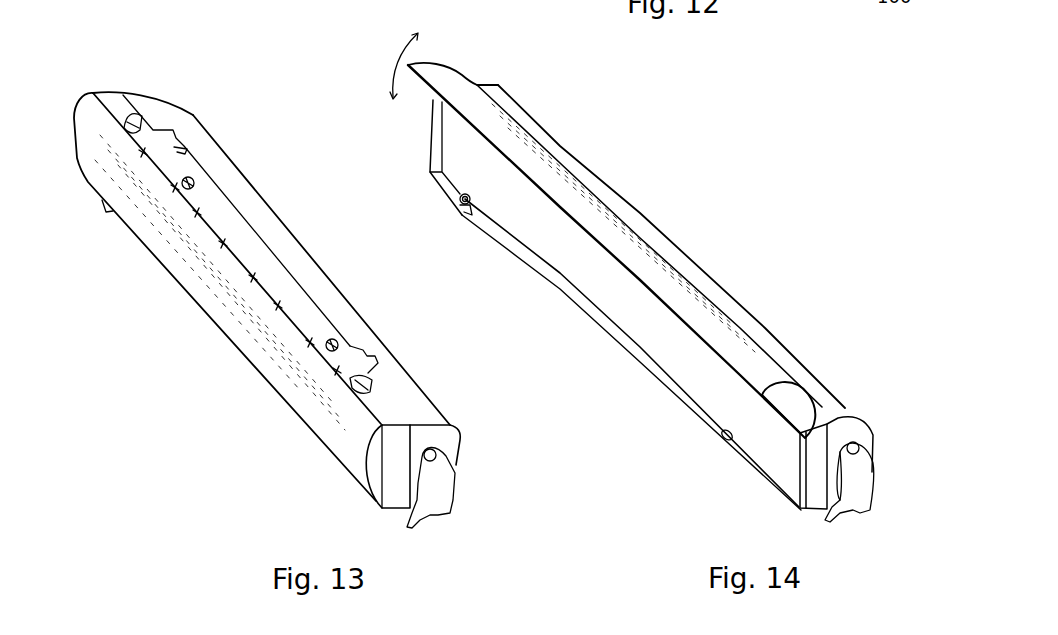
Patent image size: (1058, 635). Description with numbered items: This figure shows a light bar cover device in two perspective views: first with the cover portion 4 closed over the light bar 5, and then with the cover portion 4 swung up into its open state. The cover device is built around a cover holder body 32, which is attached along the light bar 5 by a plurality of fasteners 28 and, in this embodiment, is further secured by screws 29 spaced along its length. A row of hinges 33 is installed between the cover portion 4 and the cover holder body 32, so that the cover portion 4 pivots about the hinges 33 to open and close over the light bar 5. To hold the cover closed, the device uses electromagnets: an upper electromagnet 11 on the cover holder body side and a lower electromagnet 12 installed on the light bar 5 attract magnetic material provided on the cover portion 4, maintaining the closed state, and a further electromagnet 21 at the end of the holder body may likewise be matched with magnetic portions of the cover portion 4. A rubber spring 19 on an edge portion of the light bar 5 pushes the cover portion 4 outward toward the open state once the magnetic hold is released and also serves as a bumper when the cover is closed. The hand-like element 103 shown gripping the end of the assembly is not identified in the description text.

In FIG. 13, the cover portion 4 is at (192, 288).
In FIG. 14, the cover portion 4 is at (430, 72).
In FIG. 14, the light bar 5 is at (685, 261).
In FIG. 13, the electromagnet 11 is at (372, 385).
In FIG. 14, the electromagnet 12 is at (721, 438).
In FIG. 14, the rubber spring 19 is at (459, 197).
In FIG. 13, the electromagnet 21 is at (137, 117).
In FIG. 13, the fastener 28 is at (175, 142).
In FIG. 13, the screw 29 is at (193, 178).
In FIG. 13, the cover holder body 32 is at (398, 475).
In FIG. 13, the hinge 33 is at (198, 213).
In FIG. 13, the hand 103 is at (447, 489).
In FIG. 14, the hand 103 is at (867, 488).